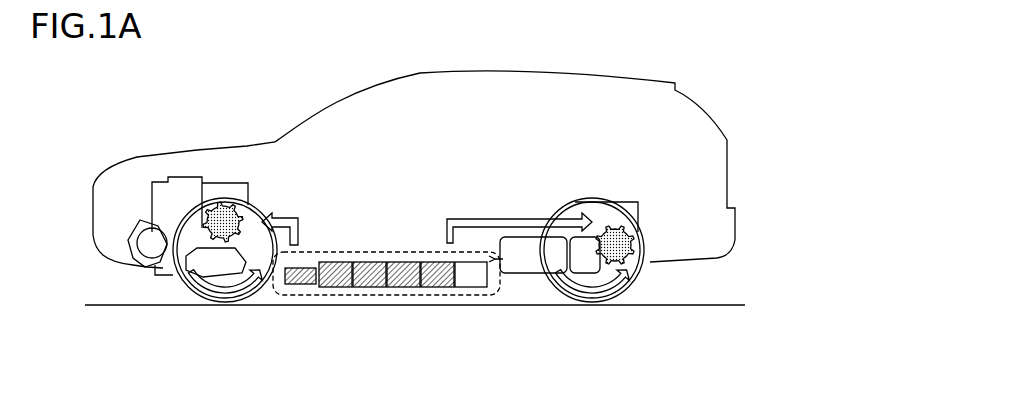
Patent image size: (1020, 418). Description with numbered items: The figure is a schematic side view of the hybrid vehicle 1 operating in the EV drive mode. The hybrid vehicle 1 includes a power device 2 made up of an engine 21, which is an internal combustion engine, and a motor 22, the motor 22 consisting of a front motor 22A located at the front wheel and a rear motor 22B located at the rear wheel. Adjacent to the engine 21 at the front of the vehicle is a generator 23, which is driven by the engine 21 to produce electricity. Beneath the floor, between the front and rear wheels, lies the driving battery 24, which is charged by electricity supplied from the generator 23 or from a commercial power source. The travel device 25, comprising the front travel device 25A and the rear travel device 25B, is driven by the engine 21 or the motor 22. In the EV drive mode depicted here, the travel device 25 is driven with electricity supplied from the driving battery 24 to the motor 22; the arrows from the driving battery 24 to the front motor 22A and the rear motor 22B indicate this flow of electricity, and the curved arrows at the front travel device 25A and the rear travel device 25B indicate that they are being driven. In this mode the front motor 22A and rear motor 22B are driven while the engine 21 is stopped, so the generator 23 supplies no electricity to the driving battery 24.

The hybrid vehicle 1 is at (262, 94).
The power device 2 is at (228, 170).
The engine 21 is at (160, 202).
The motor 22 is at (459, 220).
The front motor 22A is at (238, 214).
The rear motor 22B is at (635, 232).
The generator 23 is at (152, 248).
The driving battery 24 is at (371, 300).
The travel device 25 is at (409, 281).
The front travel device 25A is at (225, 280).
The rear travel device 25B is at (594, 280).